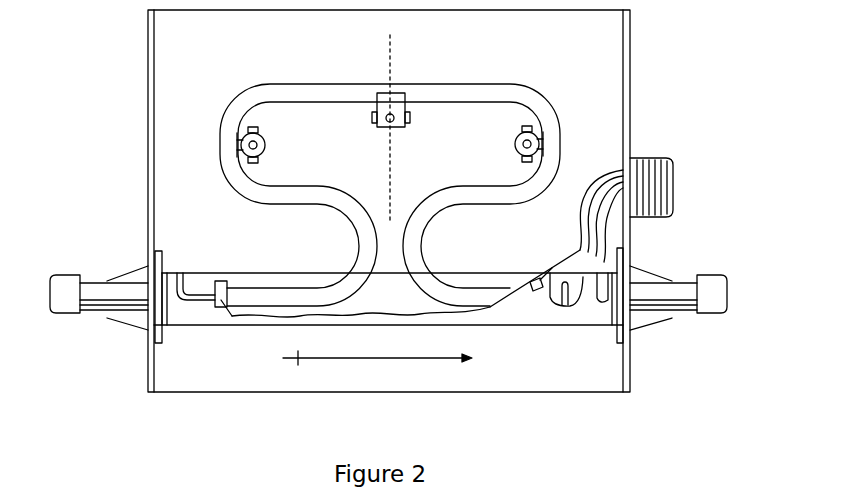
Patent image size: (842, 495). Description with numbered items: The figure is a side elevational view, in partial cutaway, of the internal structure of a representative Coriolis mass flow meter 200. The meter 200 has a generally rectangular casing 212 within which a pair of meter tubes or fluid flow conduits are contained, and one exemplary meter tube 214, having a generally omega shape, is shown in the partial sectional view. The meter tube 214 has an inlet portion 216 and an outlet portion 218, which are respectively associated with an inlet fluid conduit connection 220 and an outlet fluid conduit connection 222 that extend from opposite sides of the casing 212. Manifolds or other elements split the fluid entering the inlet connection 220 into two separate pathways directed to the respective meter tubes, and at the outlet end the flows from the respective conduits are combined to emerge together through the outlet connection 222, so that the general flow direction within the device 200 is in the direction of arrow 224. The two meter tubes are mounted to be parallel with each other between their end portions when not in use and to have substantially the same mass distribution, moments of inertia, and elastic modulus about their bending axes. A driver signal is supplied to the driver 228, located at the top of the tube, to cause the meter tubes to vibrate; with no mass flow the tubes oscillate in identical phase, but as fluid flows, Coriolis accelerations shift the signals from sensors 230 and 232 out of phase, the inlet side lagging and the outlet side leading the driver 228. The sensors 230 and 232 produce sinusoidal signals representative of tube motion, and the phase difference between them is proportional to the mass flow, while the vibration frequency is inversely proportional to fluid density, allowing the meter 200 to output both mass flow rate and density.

The Coriolis mass flow meter 200 is at (89, 115).
The casing 212 is at (630, 90).
The meter tube 214 is at (475, 83).
The inlet portion 216 is at (201, 268).
The outlet portion 218 is at (545, 314).
The inlet fluid conduit connection 220 is at (64, 335).
The outlet fluid conduit connection 222 is at (705, 335).
The arrow 224 is at (368, 360).
The driver 228 is at (410, 108).
The sensor 230 is at (265, 142).
The sensor 232 is at (515, 144).